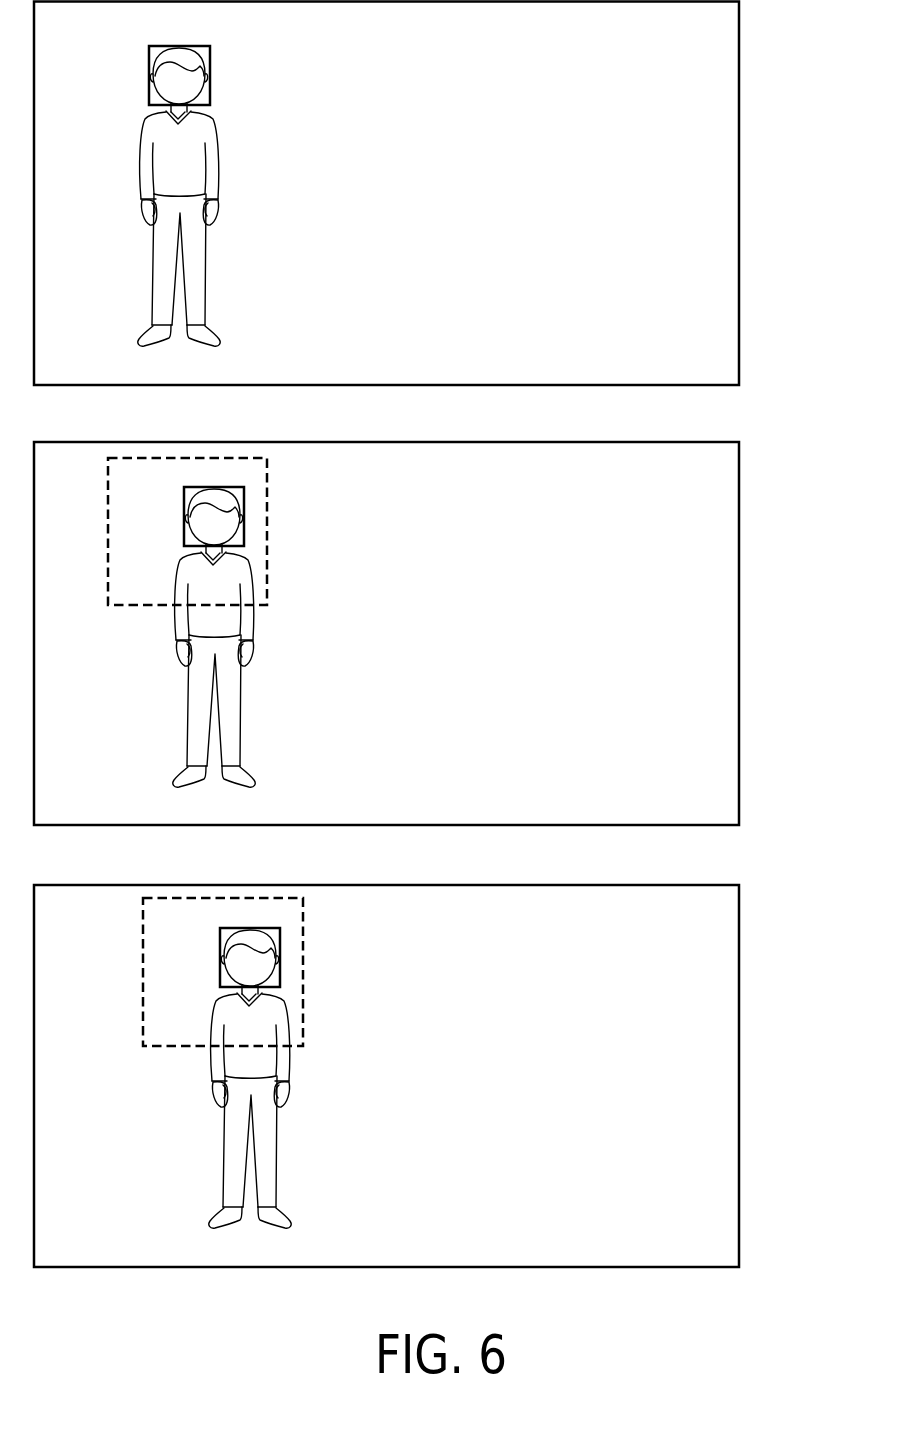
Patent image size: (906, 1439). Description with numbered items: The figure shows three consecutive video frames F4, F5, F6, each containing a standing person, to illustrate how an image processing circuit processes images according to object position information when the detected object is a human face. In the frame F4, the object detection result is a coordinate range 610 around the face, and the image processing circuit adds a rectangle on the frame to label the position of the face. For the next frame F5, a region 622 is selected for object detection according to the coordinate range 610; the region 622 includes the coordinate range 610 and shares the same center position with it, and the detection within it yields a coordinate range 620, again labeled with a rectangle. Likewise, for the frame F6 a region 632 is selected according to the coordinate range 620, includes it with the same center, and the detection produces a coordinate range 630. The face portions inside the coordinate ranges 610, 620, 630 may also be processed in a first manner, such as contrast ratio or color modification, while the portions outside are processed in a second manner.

The coordinate range 610 is at (149, 72).
The coordinate range 620 is at (184, 520).
The region 622 is at (268, 510).
The coordinate range 630 is at (220, 960).
The region 632 is at (304, 953).
The frame F4 is at (740, 190).
The frame F5 is at (740, 630).
The frame F6 is at (740, 1072).